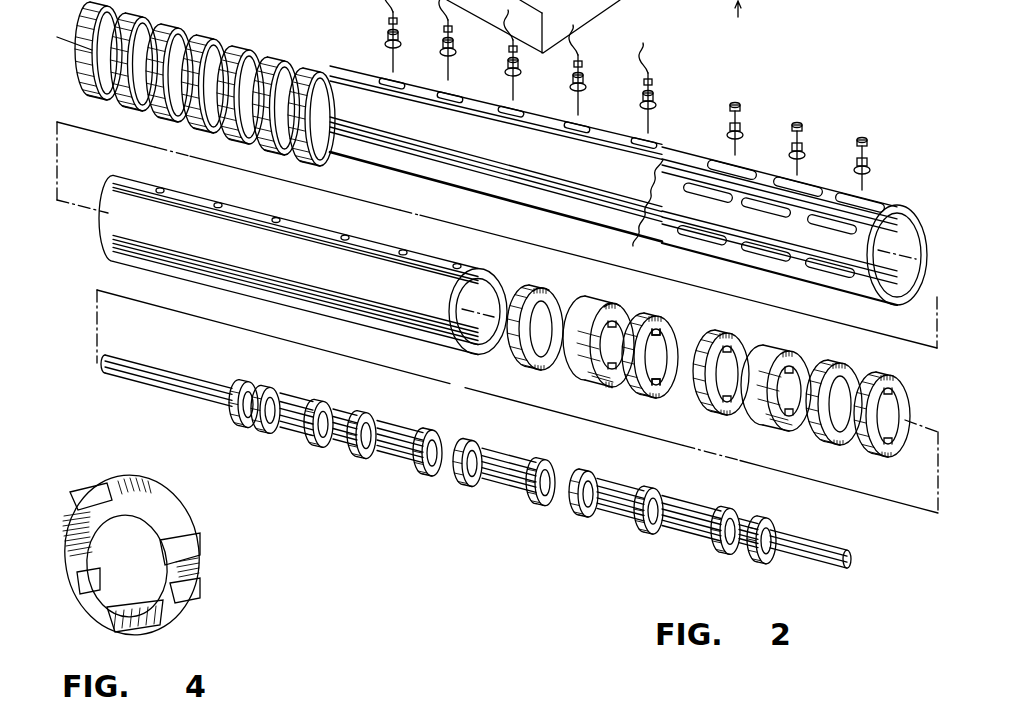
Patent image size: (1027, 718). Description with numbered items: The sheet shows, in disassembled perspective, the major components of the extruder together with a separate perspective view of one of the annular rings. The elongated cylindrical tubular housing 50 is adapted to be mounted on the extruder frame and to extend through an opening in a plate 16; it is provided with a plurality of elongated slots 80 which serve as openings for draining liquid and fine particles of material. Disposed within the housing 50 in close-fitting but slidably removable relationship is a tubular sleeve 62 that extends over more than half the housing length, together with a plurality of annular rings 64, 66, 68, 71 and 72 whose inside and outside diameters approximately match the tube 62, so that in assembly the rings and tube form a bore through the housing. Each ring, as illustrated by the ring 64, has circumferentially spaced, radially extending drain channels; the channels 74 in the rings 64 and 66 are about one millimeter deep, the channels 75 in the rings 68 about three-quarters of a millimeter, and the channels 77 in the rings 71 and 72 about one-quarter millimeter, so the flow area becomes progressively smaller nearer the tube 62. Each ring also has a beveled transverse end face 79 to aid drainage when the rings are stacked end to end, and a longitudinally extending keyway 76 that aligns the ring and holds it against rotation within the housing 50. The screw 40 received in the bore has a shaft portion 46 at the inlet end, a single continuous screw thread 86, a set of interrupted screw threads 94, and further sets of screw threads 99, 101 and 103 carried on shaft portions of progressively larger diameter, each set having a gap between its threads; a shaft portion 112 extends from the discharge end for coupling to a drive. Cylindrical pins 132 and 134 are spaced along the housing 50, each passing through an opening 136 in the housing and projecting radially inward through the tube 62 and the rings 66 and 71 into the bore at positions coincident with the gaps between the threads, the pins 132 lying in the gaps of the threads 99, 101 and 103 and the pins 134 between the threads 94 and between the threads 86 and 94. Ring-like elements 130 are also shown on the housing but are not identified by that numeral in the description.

In FIG. 2, the plate 16 is at (646, 1).
In FIG. 2, the screw 40 is at (476, 460).
In FIG. 2, the shaft portion 46 is at (812, 543).
In FIG. 2, the tubular housing 50 is at (577, 214).
In FIG. 2, the tubular sleeve 62 is at (355, 239).
In FIG. 2, the annular ring 64 is at (880, 458).
In FIG. 4, the annular ring 64 is at (193, 522).
In FIG. 2, the annular ring 66 is at (786, 434).
In FIG. 2, the annular ring 68 is at (658, 400).
In FIG. 2, the annular ring 71 is at (590, 380).
In FIG. 2, the annular ring 72 is at (517, 362).
In FIG. 4, the channels 74 is at (68, 518).
In FIG. 2, the channels 75 is at (632, 322).
In FIG. 4, the keyway 76 is at (200, 590).
In FIG. 2, the channels 77 is at (536, 290).
In FIG. 4, the beveled transverse end face 79 is at (88, 490).
In FIG. 2, the elongated slots 80 is at (655, 180).
In FIG. 2, the screw thread 86 is at (720, 508).
In FIG. 2, the screw threads 94 is at (582, 472).
In FIG. 2, the screw threads 99 is at (464, 441).
In FIG. 2, the screw threads 101 is at (343, 408).
In FIG. 2, the screw threads 103 is at (260, 386).
In FIG. 2, the shaft portion 112 is at (176, 376).
In FIG. 2, the clamp ring 130 is at (200, 83).
In FIG. 2, the pins 132 is at (396, 36).
In FIG. 2, the pins 134 is at (742, 124).
In FIG. 2, the opening 136 is at (388, 87).